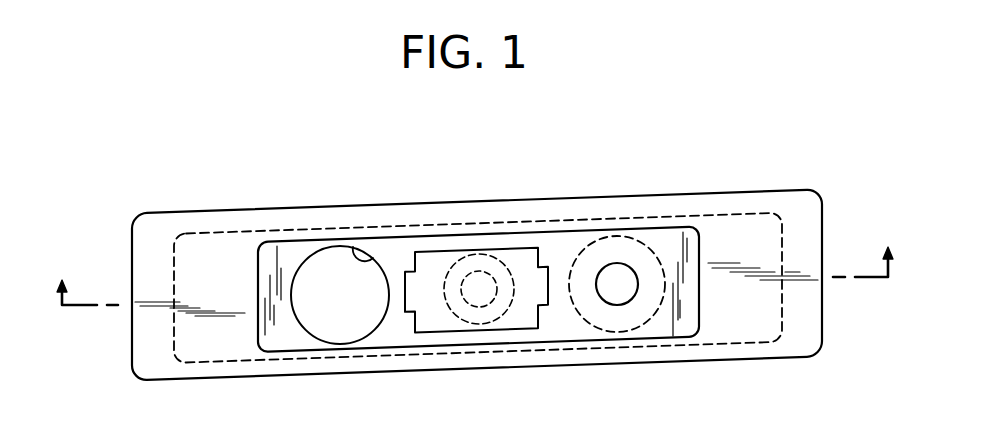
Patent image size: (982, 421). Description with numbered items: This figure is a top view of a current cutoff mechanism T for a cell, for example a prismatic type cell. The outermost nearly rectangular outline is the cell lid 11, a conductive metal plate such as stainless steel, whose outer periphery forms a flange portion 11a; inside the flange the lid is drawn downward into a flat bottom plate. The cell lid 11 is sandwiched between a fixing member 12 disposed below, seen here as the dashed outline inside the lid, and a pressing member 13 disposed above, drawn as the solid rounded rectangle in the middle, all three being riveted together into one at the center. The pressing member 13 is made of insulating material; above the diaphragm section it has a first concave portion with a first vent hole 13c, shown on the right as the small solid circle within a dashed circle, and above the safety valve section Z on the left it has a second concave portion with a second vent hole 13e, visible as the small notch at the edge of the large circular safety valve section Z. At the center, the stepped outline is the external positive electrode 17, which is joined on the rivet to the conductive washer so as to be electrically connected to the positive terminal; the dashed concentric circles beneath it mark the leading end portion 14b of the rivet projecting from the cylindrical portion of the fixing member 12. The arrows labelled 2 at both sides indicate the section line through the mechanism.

The current cutoff mechanism T is at (472, 235).
The cell lid 11 is at (776, 188).
The flange portion 11a is at (148, 348).
The fixing member 12 is at (733, 230).
The pressing member 13 is at (667, 242).
The first vent hole 13c is at (613, 274).
The second vent hole 13e is at (356, 250).
The leading end portion 14b is at (500, 264).
The external positive electrode 17 is at (430, 253).
The safety valve section Z is at (319, 268).
The section line 2- 2 is at (472, 258).